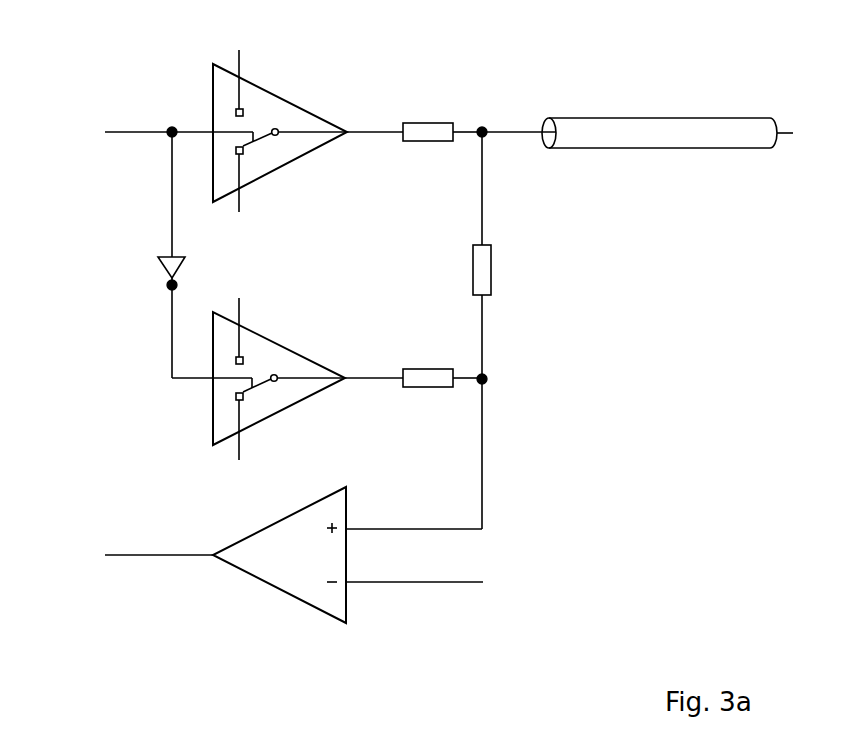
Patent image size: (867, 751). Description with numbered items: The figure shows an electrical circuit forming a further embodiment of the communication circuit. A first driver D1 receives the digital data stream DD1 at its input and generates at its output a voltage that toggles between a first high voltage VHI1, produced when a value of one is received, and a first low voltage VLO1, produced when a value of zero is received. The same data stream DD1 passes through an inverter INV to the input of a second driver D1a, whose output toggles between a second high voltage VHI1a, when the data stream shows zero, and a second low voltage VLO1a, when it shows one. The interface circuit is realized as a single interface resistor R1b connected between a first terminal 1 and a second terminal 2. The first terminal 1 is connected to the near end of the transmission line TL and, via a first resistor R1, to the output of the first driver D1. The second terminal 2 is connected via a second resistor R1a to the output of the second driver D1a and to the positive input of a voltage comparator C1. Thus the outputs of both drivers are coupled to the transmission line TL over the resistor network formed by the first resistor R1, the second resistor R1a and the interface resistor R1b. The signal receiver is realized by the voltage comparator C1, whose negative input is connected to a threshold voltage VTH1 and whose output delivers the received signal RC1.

The digital data stream DD1 is at (145, 134).
The first driver D1 is at (308, 133).
The first high voltage VHI1 is at (244, 67).
The first low voltage VLO1 is at (244, 198).
The first resistor R1 is at (442, 117).
The first terminal 1 is at (516, 115).
The transmission line TL is at (667, 118).
The interface resistor R1b is at (508, 255).
The inverter INV is at (178, 255).
The second driver D1a is at (308, 378).
The second high voltage VHI1a is at (253, 315).
The second low voltage VLO1a is at (253, 443).
The second resistor R1a is at (442, 365).
The second terminal 2 is at (492, 449).
The voltage comparator C1 is at (348, 555).
The signal receiver output RC1 is at (125, 558).
The threshold voltage VTH1 is at (526, 585).